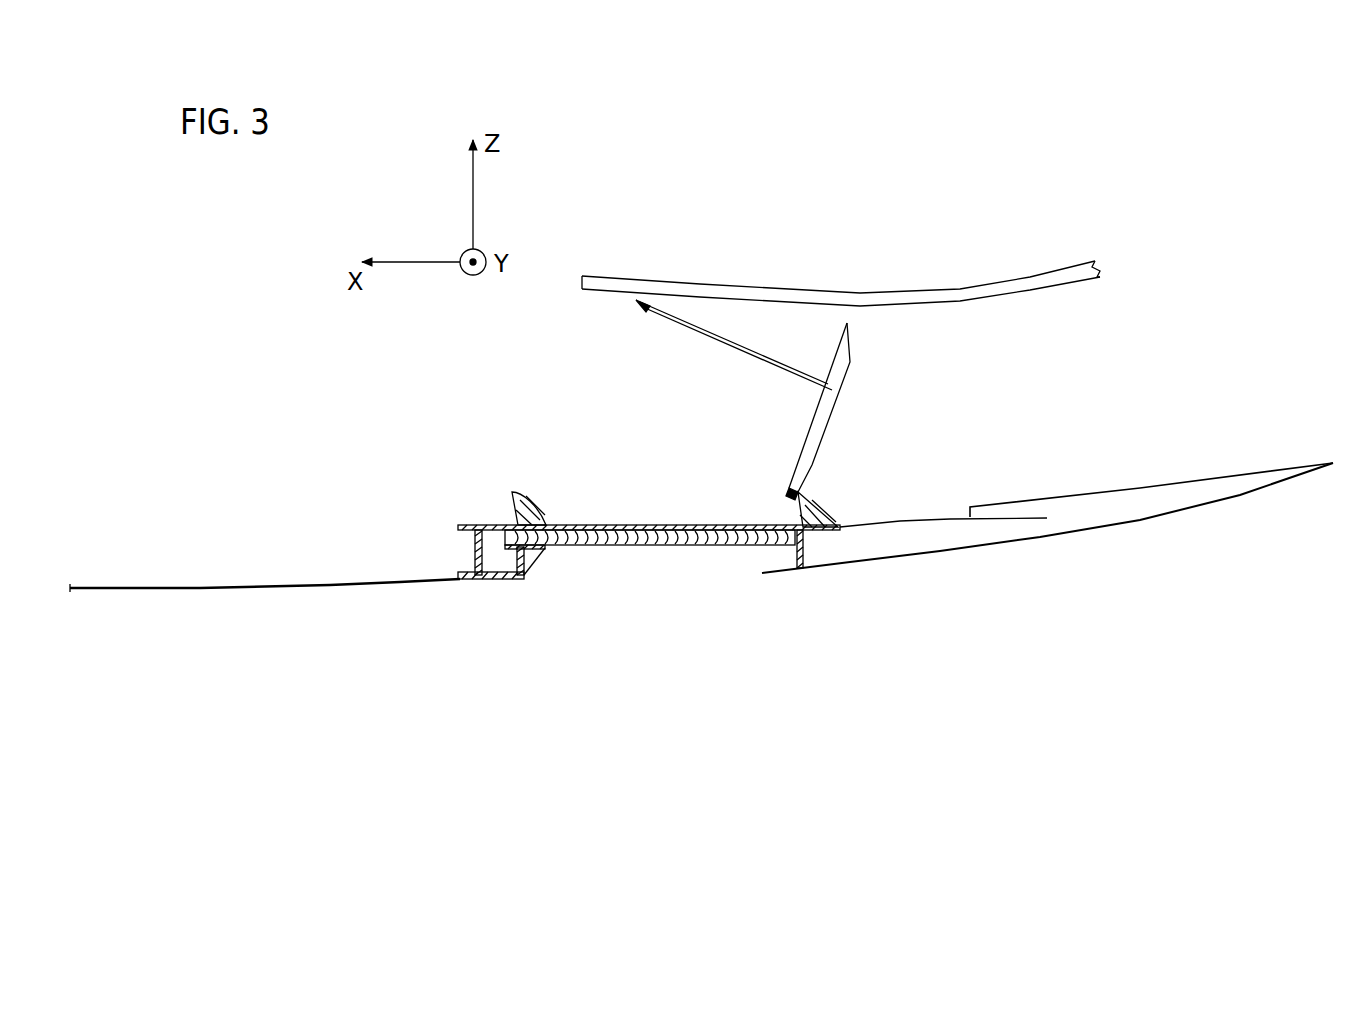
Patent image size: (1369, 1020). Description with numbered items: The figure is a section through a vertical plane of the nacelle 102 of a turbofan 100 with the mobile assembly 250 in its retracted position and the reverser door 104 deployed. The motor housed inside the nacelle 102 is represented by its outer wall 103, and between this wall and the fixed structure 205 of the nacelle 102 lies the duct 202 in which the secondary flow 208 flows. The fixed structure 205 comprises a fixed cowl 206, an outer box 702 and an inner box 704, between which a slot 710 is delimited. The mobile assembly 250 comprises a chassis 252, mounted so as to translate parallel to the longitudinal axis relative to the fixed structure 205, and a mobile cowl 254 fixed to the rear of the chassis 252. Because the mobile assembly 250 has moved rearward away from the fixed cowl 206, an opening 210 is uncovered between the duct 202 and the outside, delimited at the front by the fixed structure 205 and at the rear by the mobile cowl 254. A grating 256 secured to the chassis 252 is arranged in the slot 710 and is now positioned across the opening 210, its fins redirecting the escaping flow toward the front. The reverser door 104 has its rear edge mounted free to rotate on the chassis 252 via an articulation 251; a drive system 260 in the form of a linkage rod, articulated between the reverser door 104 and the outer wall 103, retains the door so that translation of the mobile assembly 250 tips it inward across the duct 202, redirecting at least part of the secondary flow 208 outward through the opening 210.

The turbofan 100 is at (1133, 681).
The nacelle 102 is at (1165, 607).
The outer wall 103 is at (1022, 285).
The reverser door 104 is at (842, 362).
The duct 202 is at (515, 387).
The fixed structure 205 is at (400, 461).
The fixed cowl 206 is at (150, 594).
The secondary flow 208 is at (400, 355).
The opening 210 is at (642, 620).
The mobile assembly 250 is at (1005, 667).
The articulation 251 is at (812, 502).
The chassis 252 is at (455, 585).
The mobile cowl 254 is at (1213, 490).
The grating 256 is at (590, 528).
The drive system 260 is at (727, 338).
The outer box 702 is at (520, 576).
The inner box 704 is at (512, 492).
The slot 710 is at (545, 548).